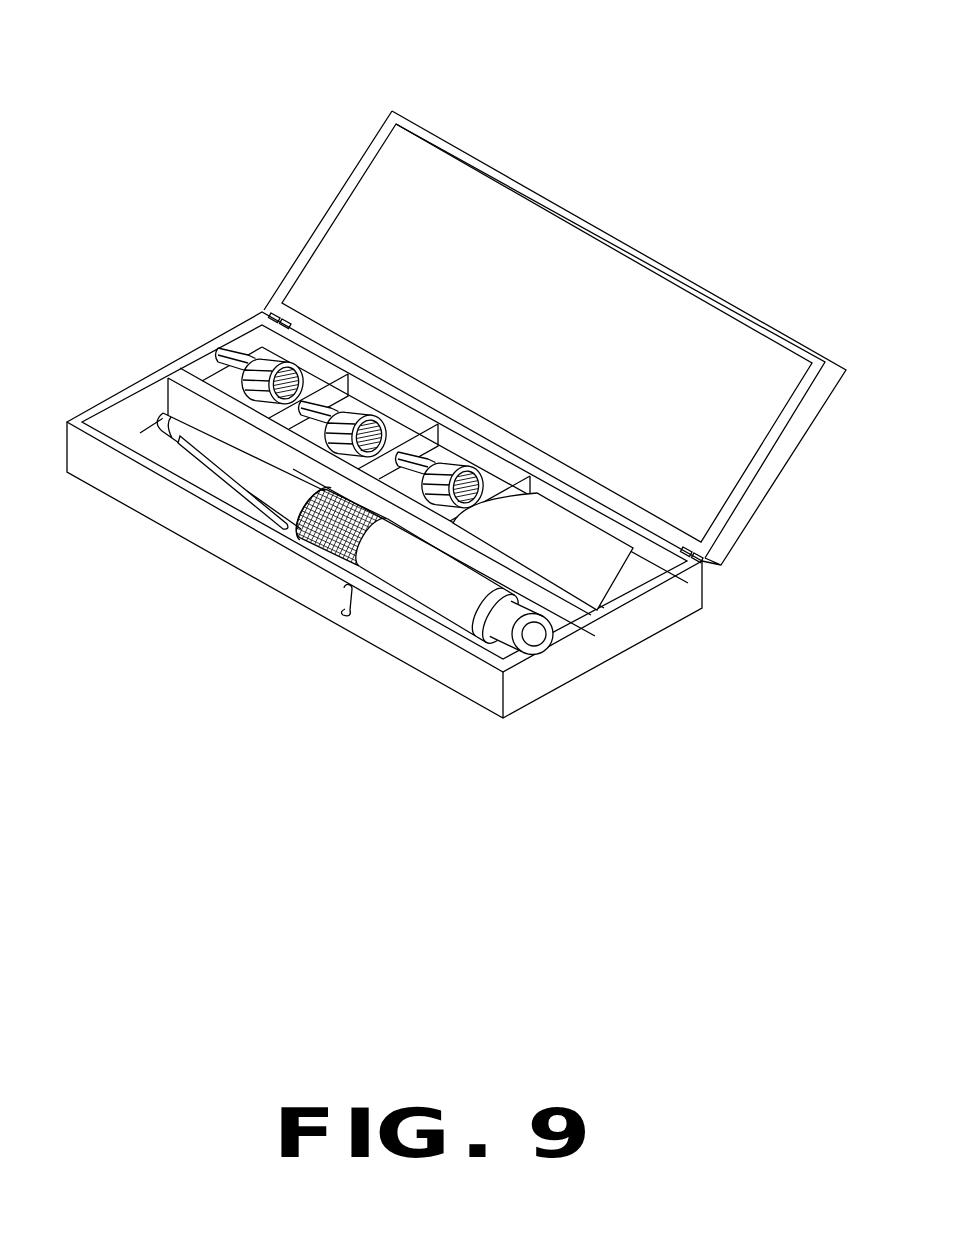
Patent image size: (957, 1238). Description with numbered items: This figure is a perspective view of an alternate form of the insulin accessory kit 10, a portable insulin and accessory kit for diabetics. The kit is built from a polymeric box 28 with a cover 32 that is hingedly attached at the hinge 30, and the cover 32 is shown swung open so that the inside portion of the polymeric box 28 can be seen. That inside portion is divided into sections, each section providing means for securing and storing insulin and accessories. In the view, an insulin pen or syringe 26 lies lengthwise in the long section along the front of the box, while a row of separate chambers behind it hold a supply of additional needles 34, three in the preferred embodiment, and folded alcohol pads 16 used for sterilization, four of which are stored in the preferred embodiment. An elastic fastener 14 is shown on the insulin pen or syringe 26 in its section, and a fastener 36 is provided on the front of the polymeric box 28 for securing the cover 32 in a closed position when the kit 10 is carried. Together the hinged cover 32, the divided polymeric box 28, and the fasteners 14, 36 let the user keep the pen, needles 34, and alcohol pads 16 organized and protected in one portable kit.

The insulin accessory kit 10 is at (712, 154).
The elastic fastener 14 is at (348, 520).
The alcohol pads 16 is at (521, 523).
The insulin pen or syringe 26 is at (163, 414).
The polymeric box 28 is at (472, 688).
The hinge 30 is at (703, 562).
The cover 32 is at (589, 219).
The additional needles 34 is at (447, 480).
The fastener 36 is at (348, 617).